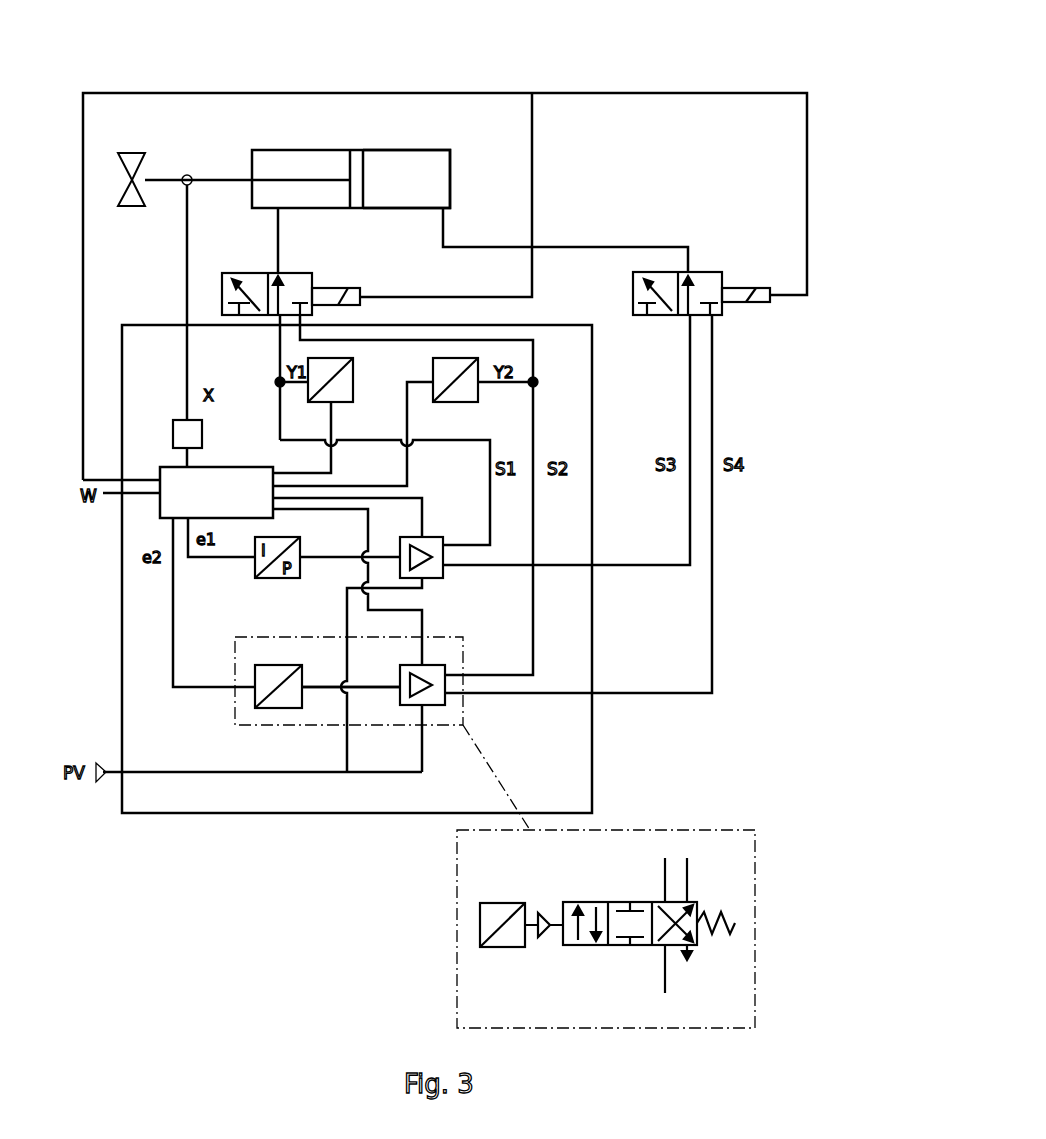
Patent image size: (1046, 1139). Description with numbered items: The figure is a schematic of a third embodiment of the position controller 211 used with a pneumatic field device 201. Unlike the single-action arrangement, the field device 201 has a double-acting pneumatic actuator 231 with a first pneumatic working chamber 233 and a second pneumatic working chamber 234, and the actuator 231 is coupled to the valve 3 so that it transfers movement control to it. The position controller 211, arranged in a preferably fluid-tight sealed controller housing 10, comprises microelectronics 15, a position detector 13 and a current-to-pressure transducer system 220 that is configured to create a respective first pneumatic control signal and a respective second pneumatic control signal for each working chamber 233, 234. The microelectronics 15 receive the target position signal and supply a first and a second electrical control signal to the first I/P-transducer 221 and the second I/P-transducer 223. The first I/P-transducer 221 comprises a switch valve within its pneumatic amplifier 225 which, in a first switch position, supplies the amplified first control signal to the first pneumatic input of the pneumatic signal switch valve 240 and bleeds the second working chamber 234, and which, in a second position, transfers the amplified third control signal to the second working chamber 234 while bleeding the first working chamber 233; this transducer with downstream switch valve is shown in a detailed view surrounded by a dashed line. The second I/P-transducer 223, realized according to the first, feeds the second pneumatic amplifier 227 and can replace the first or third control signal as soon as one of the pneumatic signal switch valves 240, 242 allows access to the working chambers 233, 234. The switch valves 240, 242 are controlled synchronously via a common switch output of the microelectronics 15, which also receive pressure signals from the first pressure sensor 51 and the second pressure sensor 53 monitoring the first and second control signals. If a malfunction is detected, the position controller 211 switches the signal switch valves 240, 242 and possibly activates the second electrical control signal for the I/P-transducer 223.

The valve 3 is at (130, 152).
The pneumatic field device 201 is at (402, 78).
The position controller 211 is at (622, 190).
The double-acting pneumatic actuator 231 is at (262, 150).
The first pneumatic working chamber 233 is at (312, 165).
The second pneumatic working chamber 234 is at (435, 173).
The pneumatic signal switch valve 240 is at (302, 285).
The pneumatic signal switch valve 242 is at (706, 283).
The position detector 13 is at (184, 431).
The microelectronics 15 is at (180, 507).
The first pressure sensor 51 is at (353, 398).
The second pressure sensor 53 is at (478, 398).
The pneumatic amplifier 225 is at (442, 572).
The second pneumatic amplifier 227 is at (547, 917).
The current-to-pressure transducer system 220 is at (220, 653).
The first I/P-transducer 221 is at (335, 592).
The second I/P-transducer 223 is at (322, 696).
The controller housing 10 is at (592, 812).